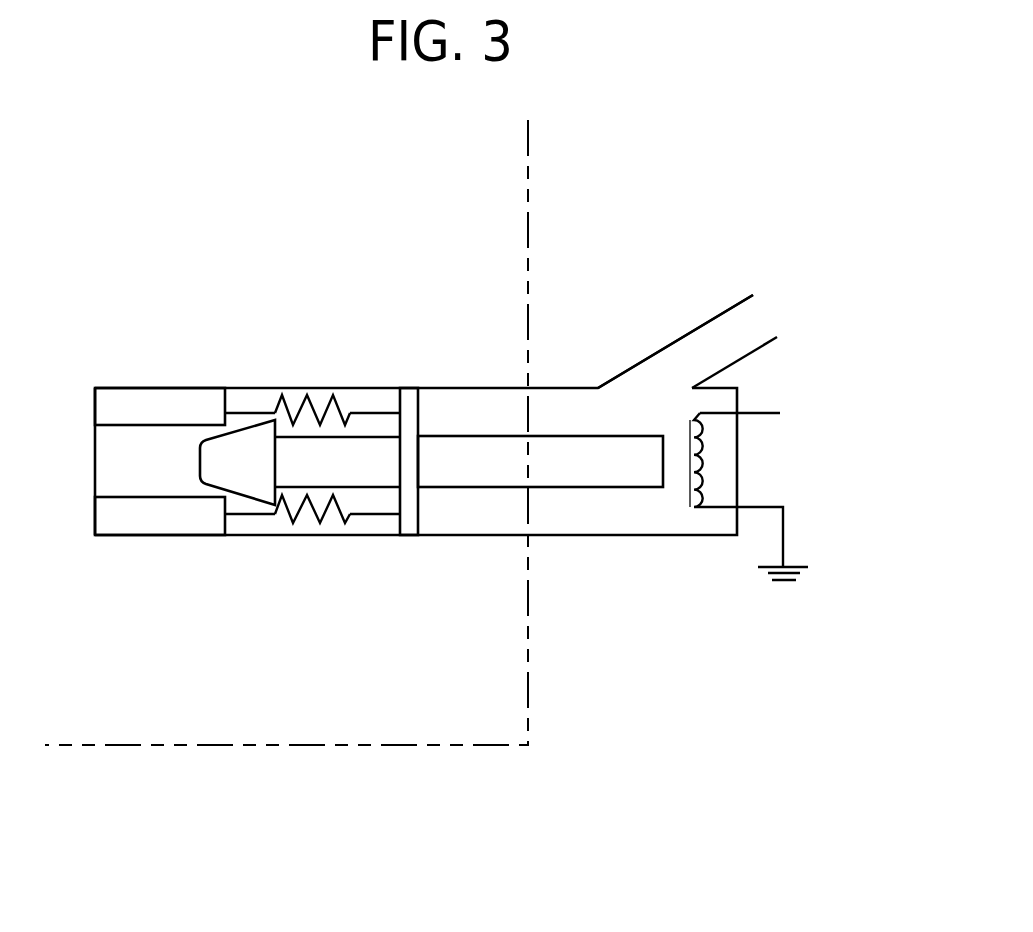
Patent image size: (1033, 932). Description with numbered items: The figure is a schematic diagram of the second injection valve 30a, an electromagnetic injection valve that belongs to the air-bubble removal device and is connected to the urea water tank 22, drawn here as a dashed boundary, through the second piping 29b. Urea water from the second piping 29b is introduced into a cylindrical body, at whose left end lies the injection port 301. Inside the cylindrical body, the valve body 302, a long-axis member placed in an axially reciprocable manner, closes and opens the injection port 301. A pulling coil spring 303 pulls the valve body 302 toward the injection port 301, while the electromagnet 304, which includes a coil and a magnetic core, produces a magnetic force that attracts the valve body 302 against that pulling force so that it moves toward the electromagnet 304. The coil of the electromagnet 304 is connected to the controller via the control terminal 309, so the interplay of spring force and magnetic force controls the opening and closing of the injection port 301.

The urea water tank 22 is at (408, 745).
The second piping 29b is at (758, 318).
The second injection valve 30a is at (402, 573).
The injection port 301 is at (101, 494).
The valve body 302 is at (467, 451).
The pulling coil spring 303 is at (278, 397).
The electromagnet 304 is at (688, 502).
The control terminal 309 is at (780, 414).